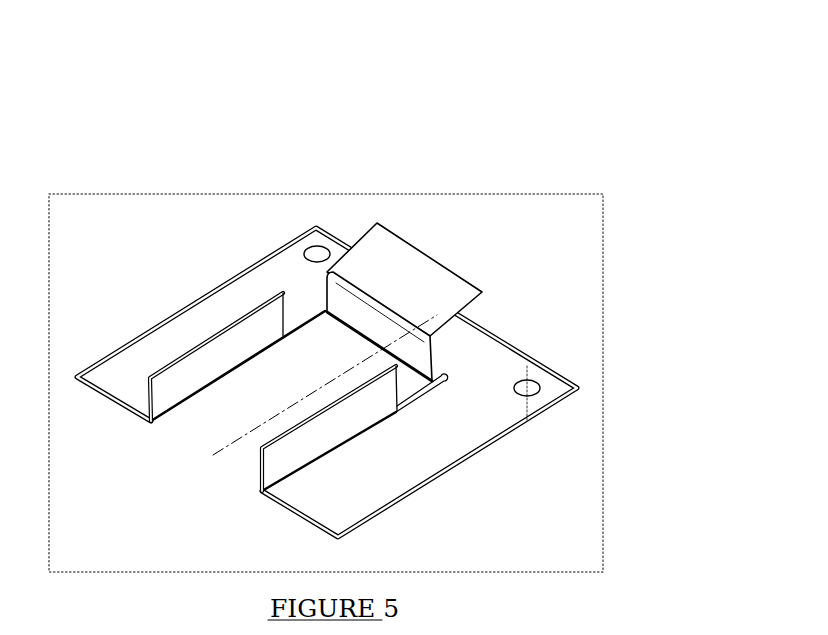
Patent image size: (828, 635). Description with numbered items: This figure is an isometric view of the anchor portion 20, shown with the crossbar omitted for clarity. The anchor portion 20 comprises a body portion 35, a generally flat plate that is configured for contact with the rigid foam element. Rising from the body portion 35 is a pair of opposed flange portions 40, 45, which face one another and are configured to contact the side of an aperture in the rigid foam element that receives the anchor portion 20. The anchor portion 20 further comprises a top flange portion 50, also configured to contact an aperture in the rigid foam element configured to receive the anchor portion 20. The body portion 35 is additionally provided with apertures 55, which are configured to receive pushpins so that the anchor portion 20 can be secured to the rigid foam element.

The anchor portion 20 is at (516, 296).
The body portion 35 is at (280, 275).
The flange portion 40 is at (198, 360).
The flange portion 45 is at (358, 415).
The top flange portion 50 is at (355, 315).
The apertures 55 is at (315, 240).